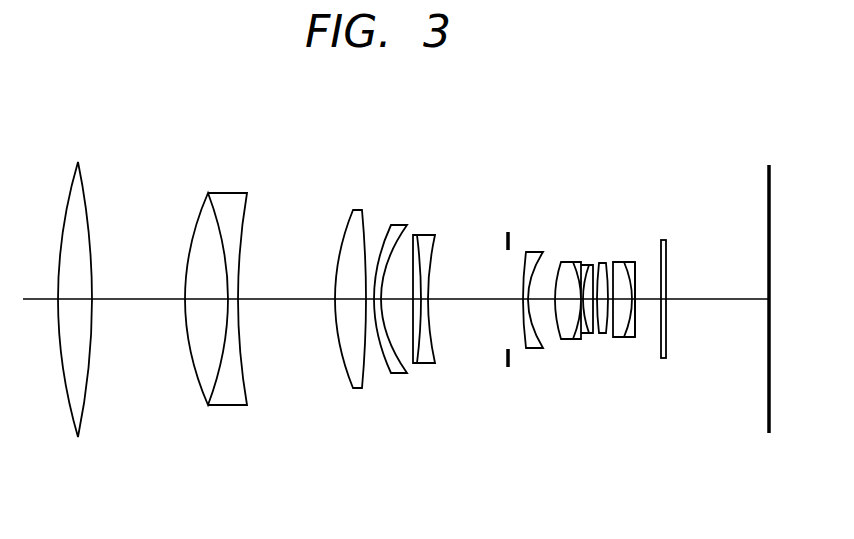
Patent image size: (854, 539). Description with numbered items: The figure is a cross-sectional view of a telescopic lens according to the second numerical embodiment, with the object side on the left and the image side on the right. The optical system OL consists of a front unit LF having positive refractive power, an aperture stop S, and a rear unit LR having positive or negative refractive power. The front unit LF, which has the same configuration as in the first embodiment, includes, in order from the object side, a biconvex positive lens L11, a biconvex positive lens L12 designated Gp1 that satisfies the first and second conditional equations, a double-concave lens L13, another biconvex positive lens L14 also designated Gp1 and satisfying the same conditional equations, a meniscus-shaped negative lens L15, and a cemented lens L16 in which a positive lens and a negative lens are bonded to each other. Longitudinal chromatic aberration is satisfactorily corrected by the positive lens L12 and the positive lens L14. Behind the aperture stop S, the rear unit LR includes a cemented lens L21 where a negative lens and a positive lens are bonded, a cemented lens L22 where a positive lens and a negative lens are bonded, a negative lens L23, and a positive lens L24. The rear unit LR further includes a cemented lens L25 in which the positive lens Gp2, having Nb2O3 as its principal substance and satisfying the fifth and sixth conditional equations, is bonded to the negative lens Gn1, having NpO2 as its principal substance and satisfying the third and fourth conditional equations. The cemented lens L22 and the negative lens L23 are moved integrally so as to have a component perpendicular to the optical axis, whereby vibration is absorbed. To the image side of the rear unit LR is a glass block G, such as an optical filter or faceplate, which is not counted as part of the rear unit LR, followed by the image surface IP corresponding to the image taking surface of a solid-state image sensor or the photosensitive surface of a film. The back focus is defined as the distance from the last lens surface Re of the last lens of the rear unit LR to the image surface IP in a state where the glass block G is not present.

The optical system OL is at (662, 127).
The front unit LF is at (445, 460).
The rear unit LR is at (687, 460).
The biconvex positive lens L11 is at (76, 287).
The biconvex positive lens L12 is at (207, 192).
The double-concave lens L13 is at (231, 200).
The biconvex positive lens L14 is at (357, 212).
The meniscus-shaped negative lens L15 is at (403, 227).
The cemented lens L16 is at (427, 237).
The positive lens Gp1 is at (208, 384).
The aperture stop S is at (508, 226).
The cemented lens L21 is at (532, 257).
The cemented lens L22 is at (563, 340).
The negative lens L23 is at (582, 262).
The positive lens L24 is at (605, 263).
The cemented lens L25 is at (625, 265).
The positive lens Gp2 is at (612, 337).
The negative lens Gn1 is at (637, 336).
The last lens surface Re is at (633, 322).
The glass block G is at (667, 238).
The image surface IP is at (767, 184).